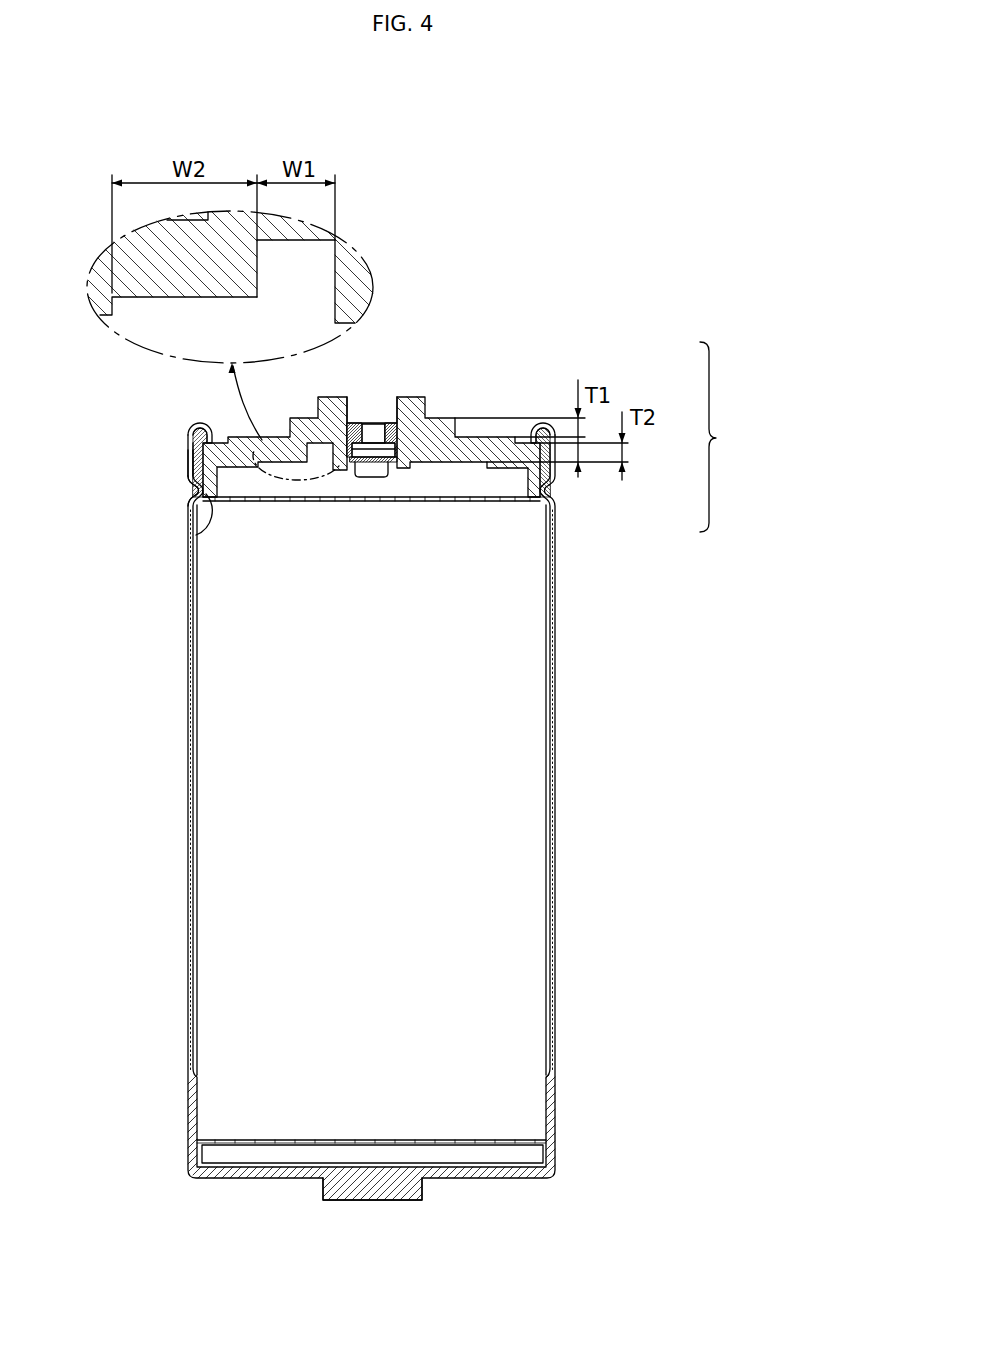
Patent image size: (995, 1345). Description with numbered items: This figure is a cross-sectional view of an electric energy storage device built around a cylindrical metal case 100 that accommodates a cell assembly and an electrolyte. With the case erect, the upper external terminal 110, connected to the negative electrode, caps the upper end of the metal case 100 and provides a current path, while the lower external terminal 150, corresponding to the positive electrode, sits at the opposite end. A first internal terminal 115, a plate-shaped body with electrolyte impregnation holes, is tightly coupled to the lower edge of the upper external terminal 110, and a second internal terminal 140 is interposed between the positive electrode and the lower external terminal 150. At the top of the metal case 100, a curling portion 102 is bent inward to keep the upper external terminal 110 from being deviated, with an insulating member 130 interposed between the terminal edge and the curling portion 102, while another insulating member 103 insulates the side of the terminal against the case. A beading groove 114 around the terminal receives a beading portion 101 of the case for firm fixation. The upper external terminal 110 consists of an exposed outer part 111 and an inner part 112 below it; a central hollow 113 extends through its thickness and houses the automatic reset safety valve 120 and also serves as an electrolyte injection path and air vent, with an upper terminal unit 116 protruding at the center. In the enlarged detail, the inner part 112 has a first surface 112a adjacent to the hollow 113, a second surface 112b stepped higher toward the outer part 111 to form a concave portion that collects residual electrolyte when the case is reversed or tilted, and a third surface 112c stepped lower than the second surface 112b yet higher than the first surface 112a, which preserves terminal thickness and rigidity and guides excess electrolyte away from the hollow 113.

The metal case 100 is at (187, 655).
The beading portion 101 is at (185, 482).
The curling portion 102 is at (185, 420).
The insulating member 103 is at (190, 462).
The upper external terminal 110 is at (481, 432).
The outer part 111 is at (470, 407).
The inner part 112 is at (452, 477).
The first surface 112a is at (345, 325).
The second surface 112b is at (297, 242).
The third surface 112c is at (195, 298).
The hollow 113 is at (378, 398).
The beading groove 114 is at (200, 521).
The first internal terminal 115 is at (462, 502).
The upper terminal unit 116 is at (388, 437).
The safety valve 120 is at (377, 466).
The insulating member 130 is at (198, 437).
The second internal terminal 140 is at (527, 1140).
The lower external terminal 150 is at (309, 1206).